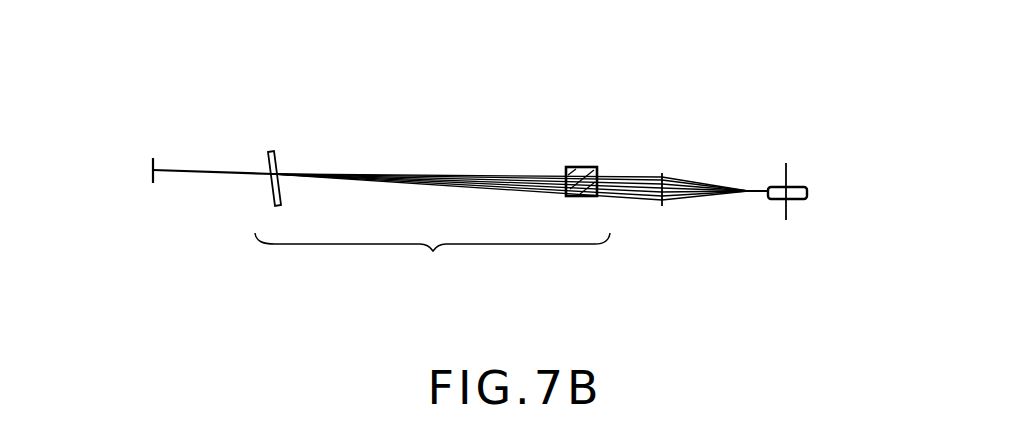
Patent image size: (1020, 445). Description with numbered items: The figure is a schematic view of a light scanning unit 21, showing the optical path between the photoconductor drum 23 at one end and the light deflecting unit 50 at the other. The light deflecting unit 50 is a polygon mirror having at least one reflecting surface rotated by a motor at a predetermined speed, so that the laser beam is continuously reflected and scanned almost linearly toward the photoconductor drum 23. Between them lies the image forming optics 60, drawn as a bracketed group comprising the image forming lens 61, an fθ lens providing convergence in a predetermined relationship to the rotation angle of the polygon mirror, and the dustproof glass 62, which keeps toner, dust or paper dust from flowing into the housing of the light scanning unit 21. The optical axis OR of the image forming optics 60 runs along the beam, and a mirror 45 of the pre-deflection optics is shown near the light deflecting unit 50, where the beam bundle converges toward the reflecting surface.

The light scanning unit 21 is at (431, 136).
The photoconductor drum 23 is at (155, 165).
The dustproof glass 62 is at (274, 153).
The image forming lens 61 is at (579, 166).
The optical axis of the image forming optics OR is at (537, 178).
The mirror 45 is at (662, 206).
The light deflecting unit 50 is at (796, 186).
The image forming optics 60 is at (432, 257).